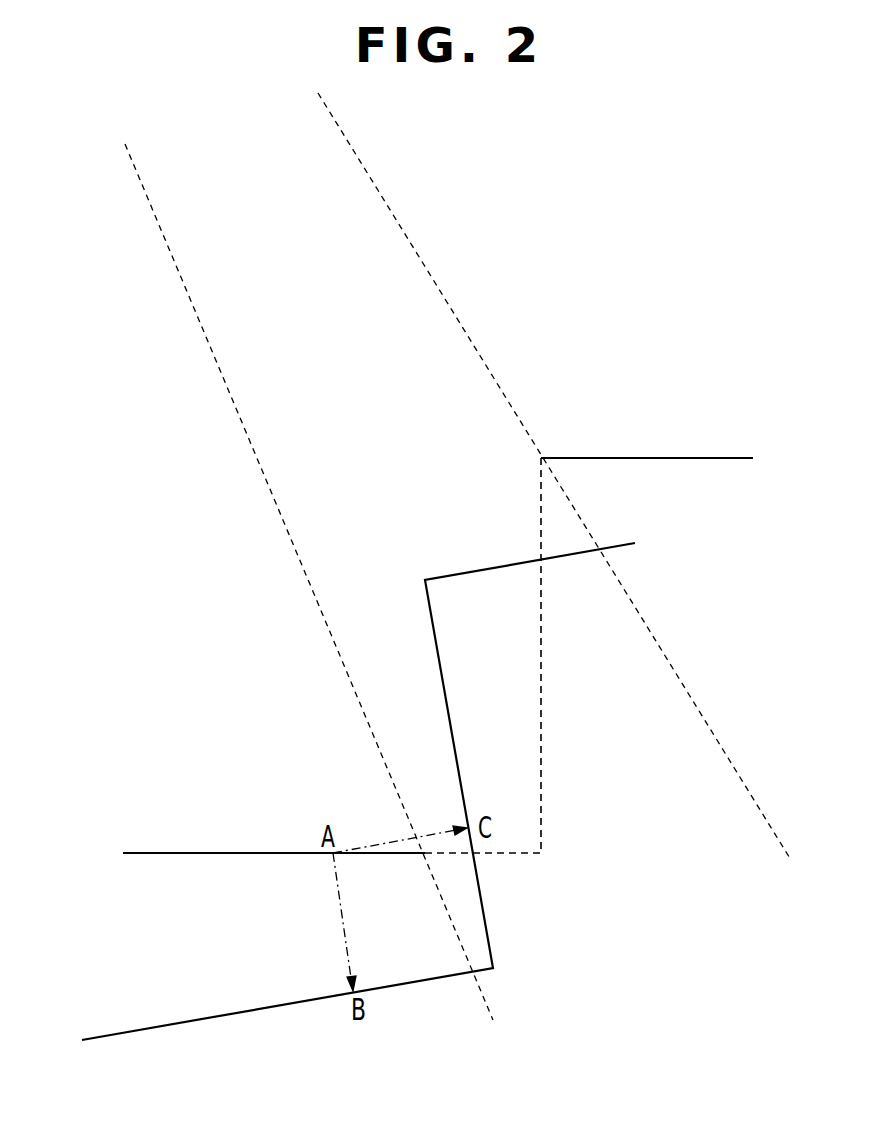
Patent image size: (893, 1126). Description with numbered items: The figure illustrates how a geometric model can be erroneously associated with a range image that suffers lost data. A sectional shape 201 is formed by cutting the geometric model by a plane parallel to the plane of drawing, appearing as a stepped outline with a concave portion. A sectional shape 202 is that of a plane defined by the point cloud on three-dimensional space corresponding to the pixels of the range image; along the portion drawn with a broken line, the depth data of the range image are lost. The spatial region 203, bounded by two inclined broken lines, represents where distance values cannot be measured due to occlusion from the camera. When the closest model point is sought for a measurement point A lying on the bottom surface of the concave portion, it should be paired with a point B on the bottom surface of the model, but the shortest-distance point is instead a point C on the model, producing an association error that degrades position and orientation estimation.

The sectional shape 201 is at (490, 929).
The sectional shape 202 is at (656, 457).
The spatial region 203 is at (372, 224).